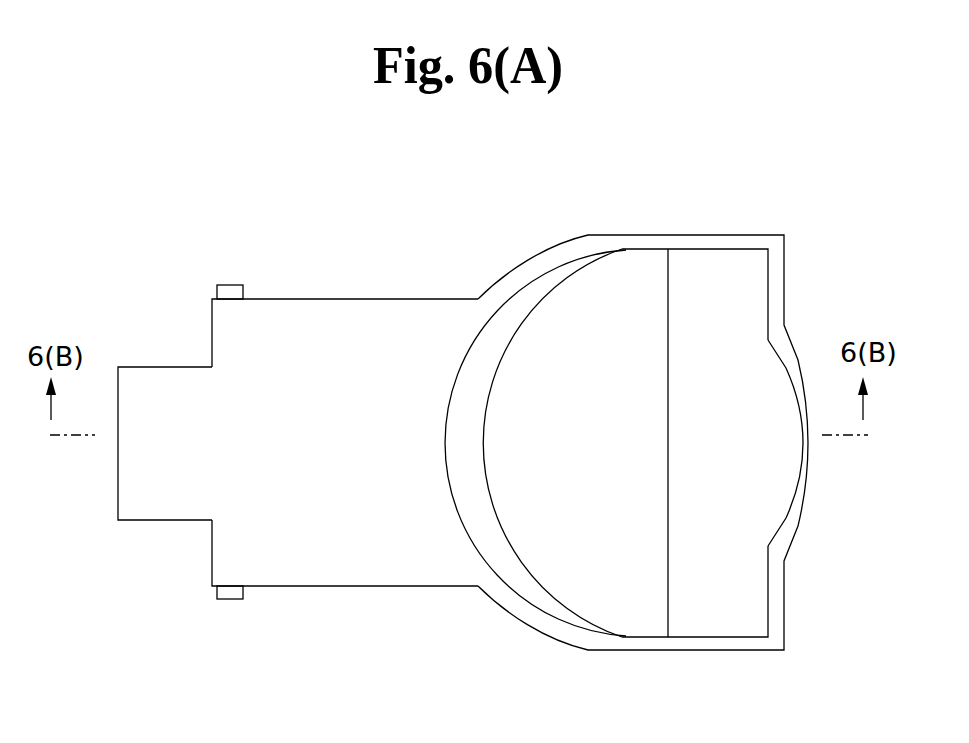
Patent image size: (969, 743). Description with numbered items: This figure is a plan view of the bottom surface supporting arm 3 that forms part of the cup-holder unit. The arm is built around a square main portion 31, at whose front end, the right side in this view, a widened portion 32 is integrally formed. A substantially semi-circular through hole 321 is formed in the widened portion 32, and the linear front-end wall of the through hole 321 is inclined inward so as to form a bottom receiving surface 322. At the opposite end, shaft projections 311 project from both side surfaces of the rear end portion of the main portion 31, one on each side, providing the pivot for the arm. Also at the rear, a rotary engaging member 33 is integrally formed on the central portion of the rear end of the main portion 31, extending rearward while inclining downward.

The bottom surface supporting arm 3 is at (826, 203).
The main portion 31 is at (362, 320).
The shaft projections 311 is at (228, 284).
The widened portion 32 is at (588, 247).
The through hole 321 is at (595, 555).
The bottom receiving surface 322 is at (763, 523).
The rotary engaging member 33 is at (158, 510).